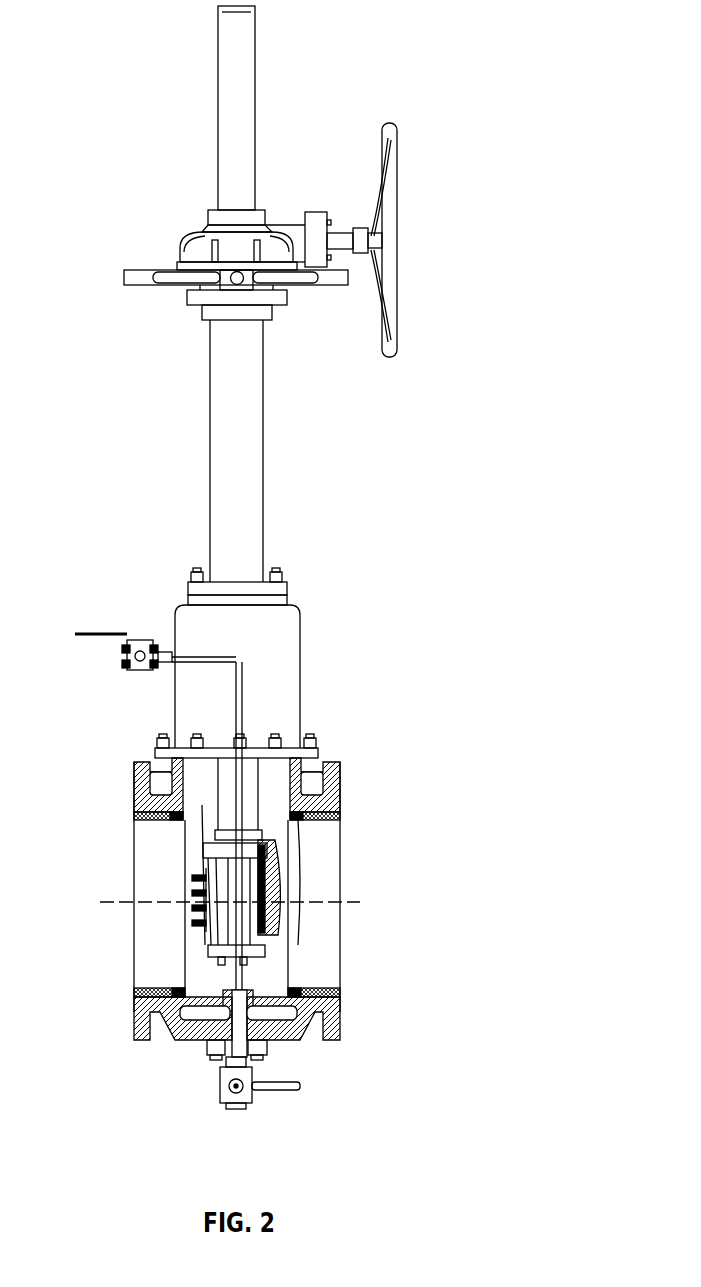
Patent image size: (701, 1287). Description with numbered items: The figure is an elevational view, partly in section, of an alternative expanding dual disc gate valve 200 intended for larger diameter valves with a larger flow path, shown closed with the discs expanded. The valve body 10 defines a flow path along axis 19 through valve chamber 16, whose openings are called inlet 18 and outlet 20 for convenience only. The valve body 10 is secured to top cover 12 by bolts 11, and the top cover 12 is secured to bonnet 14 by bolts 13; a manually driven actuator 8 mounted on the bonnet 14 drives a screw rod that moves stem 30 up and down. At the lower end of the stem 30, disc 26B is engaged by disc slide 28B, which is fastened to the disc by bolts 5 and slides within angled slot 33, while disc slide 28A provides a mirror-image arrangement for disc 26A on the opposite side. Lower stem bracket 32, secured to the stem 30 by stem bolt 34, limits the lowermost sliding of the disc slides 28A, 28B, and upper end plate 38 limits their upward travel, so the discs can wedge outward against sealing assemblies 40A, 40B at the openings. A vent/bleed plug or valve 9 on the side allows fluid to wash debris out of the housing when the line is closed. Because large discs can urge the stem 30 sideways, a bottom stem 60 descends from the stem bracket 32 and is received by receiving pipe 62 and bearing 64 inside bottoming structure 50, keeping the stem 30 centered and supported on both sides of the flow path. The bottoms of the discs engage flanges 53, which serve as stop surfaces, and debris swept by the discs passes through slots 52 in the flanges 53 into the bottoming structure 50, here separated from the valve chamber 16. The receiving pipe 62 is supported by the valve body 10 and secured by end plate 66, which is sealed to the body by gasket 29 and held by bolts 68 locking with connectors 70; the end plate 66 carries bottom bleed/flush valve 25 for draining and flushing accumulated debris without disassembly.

The expanding dual disc gate valve 200 is at (512, 176).
The actuator 8 is at (398, 147).
The bonnet 14 is at (263, 374).
The bolts 13 is at (280, 574).
The top cover 12 is at (300, 626).
The vent/bleed plug or valve 9 is at (136, 641).
The bolts 11 is at (278, 738).
The stem 30 is at (270, 758).
The valve body 10 is at (322, 792).
The sealing assembly 40B is at (183, 772).
The sealing assembly 40A is at (300, 815).
The disc 26B is at (140, 802).
The disc 26A is at (285, 848).
The upper end plate 38 is at (200, 826).
The inlet 18 is at (138, 860).
The angled slot 33 is at (205, 860).
The bolts 5 is at (195, 895).
The disc slide 28B is at (200, 920).
The disc slide 28A is at (292, 888).
The lower stem bracket 32 is at (220, 942).
The stem bolt 34 is at (268, 956).
The outlet 20 is at (330, 900).
The axis 19 is at (356, 903).
The bottom stem 60 is at (236, 982).
The valve chamber 16 is at (185, 987).
The receiving pipe 62 is at (250, 1000).
The flanges 53 is at (322, 996).
The bearing 64 is at (222, 1036).
The slots 52 is at (200, 1014).
The bolts 68 is at (215, 1057).
The bottoming structure 50 is at (262, 1057).
The connectors 70 is at (240, 1100).
The bottom bleed/flush valve 25 is at (240, 1108).
The gasket 29 is at (280, 1086).
The end plate 66 is at (266, 1092).